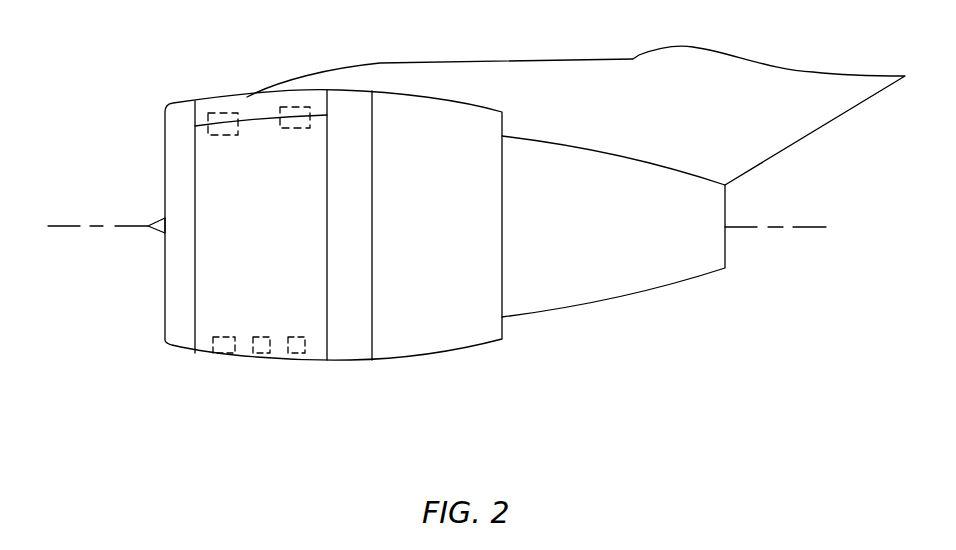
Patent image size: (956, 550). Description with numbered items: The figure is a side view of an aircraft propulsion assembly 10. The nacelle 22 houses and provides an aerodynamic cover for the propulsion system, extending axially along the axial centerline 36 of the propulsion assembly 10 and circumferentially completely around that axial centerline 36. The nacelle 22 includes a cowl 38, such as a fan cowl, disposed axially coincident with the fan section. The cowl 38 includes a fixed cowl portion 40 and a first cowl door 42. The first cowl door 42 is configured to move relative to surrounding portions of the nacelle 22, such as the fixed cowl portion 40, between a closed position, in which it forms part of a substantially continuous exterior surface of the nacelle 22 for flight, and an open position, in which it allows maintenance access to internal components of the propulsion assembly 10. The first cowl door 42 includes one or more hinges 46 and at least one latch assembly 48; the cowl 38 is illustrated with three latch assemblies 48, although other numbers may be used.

The propulsion assembly 10 is at (113, 92).
The nacelle 22 is at (440, 363).
The axial centerline 36 is at (817, 229).
The cowl 38 is at (312, 300).
The fixed cowl portion 40 is at (247, 97).
The first cowl door 42 is at (217, 267).
The hinges 46 is at (222, 112).
The latch assembly 48 is at (292, 352).